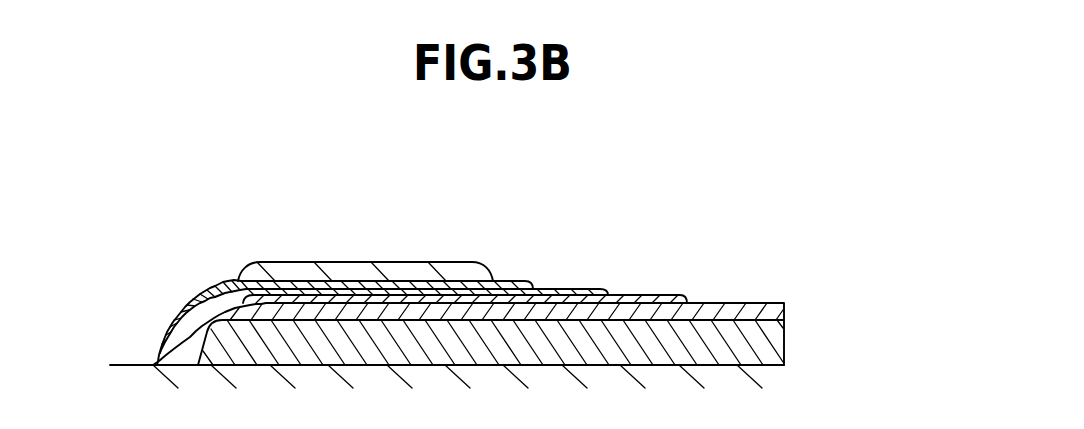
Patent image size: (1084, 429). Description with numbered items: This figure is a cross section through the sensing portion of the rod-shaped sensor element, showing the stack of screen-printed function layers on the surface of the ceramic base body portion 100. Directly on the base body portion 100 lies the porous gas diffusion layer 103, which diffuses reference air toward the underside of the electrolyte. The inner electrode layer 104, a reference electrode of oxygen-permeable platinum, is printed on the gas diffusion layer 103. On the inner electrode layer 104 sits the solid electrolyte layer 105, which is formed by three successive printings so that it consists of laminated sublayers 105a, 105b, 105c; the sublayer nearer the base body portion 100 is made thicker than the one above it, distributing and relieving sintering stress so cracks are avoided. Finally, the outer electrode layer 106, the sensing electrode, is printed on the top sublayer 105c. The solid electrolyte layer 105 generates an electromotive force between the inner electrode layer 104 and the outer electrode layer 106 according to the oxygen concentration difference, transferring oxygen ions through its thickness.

The base body portion 100 is at (743, 370).
The gas diffusion layer 103 is at (742, 350).
The inner electrode layer 104 is at (755, 313).
The solid electrolyte layer 105 is at (475, 264).
The first sublayer of solid electrolyte layer 105a is at (645, 295).
The second sublayer of solid electrolyte layer 105b is at (598, 290).
The third sublayer of solid electrolyte layer 105c is at (513, 282).
The outer electrode layer 106 is at (403, 270).